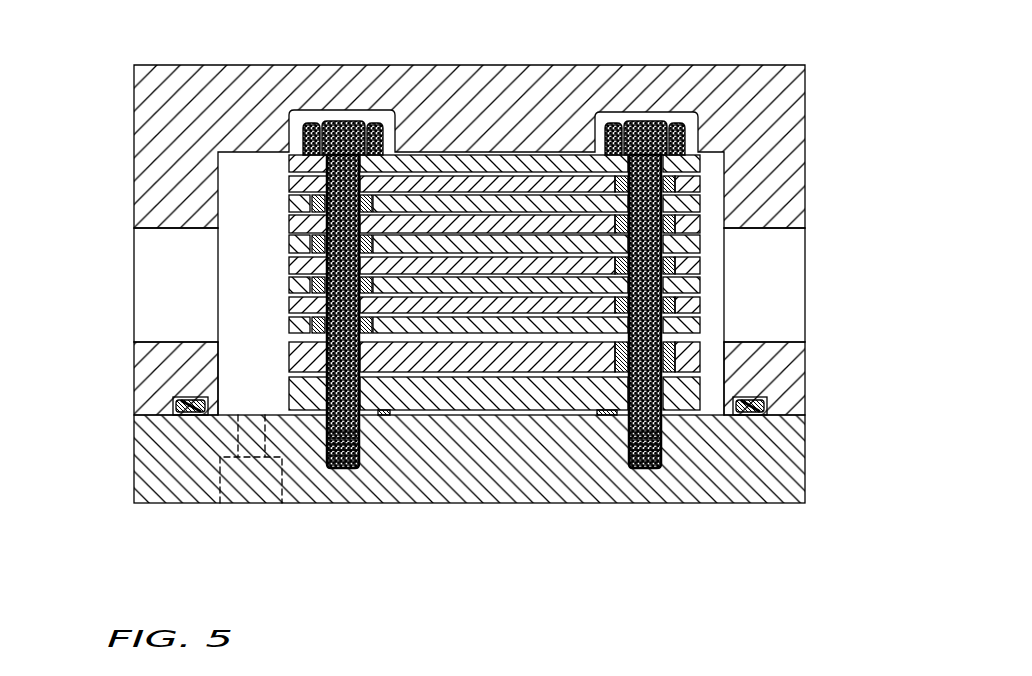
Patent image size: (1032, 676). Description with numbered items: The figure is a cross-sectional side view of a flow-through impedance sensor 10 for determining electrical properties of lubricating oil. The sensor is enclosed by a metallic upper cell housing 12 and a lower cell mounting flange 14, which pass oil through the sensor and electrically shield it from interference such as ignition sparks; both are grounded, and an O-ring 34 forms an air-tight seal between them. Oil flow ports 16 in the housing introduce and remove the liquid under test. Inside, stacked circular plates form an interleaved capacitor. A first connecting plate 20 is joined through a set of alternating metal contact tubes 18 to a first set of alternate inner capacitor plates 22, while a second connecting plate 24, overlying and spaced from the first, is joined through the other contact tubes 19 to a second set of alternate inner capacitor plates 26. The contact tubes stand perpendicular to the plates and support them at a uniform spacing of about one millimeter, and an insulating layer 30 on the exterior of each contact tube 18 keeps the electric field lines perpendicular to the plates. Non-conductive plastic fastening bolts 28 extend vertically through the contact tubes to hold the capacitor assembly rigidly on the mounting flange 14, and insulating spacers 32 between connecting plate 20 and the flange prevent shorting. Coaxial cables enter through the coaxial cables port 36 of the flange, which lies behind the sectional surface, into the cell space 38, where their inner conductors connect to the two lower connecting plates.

The impedance sensor 10 is at (95, 98).
The upper cell housing 12 is at (805, 93).
The lower cell mounting flange 14 is at (727, 504).
The oil flow ports 16 is at (184, 293).
The metal contact tubes 18 is at (700, 182).
The metal contact tubes 19 is at (289, 171).
The first connecting plate 20 is at (705, 393).
The first set of inner capacitor plates 22 is at (700, 267).
The second connecting plate 24 is at (289, 358).
The second set of inner capacitor plates 26 is at (289, 305).
The fastening bolts 28 is at (343, 140).
The insulating layer 30 is at (305, 204).
The insulating spacers 32 is at (600, 412).
The O-ring 34 is at (755, 400).
The coaxial cables port 36 is at (247, 505).
The cell space 38 is at (215, 410).